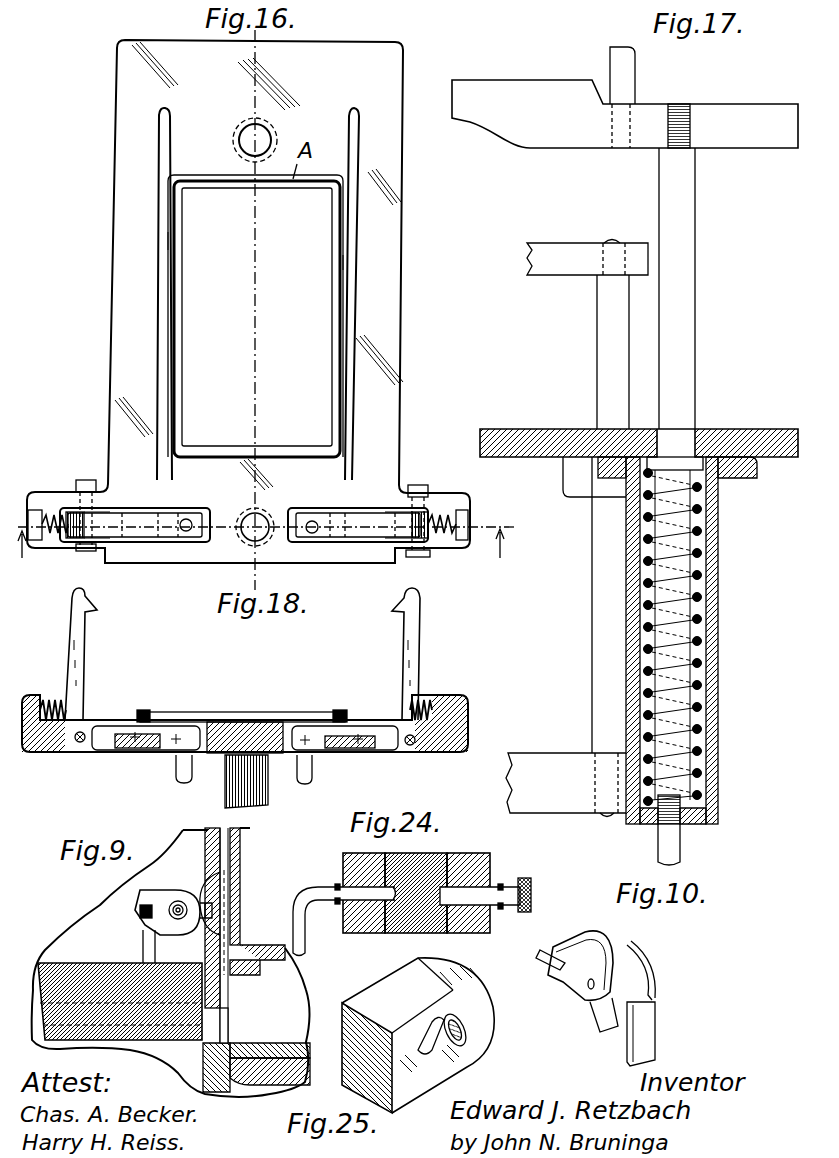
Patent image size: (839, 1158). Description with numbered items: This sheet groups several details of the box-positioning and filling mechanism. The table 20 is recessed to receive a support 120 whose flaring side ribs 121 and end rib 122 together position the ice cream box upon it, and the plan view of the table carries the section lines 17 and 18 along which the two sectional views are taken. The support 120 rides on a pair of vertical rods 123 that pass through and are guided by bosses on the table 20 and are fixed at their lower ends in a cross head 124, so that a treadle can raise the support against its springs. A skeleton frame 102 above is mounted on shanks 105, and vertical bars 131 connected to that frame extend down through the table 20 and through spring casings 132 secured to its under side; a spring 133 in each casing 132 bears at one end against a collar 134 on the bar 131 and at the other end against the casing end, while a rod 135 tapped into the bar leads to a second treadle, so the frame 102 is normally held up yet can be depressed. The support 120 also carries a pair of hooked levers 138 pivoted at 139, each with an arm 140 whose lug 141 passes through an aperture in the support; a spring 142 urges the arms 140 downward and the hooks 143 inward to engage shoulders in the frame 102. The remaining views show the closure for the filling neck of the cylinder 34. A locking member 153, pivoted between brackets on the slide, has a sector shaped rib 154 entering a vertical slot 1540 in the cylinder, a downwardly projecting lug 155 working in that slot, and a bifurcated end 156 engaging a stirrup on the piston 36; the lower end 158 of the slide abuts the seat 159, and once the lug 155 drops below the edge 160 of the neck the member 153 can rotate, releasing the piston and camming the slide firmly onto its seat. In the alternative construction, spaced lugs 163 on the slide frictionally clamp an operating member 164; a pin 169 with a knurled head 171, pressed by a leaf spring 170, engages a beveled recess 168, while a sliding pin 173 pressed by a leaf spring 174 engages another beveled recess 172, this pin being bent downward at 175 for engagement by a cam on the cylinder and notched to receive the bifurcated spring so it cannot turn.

In FIG. 16, the section line 17— 17 is at (260, 303).
In FIG. 16, the section line 18— 18 is at (270, 553).
In FIG. 17, the table 20 is at (736, 432).
In FIG. 9, the liner or cylinder 34 is at (79, 942).
In FIG. 9, the piston 36 is at (54, 965).
In FIG. 17, the skeleton frame 102 is at (625, 114).
In FIG. 17, the shank 105 is at (626, 80).
In FIG. 16, the support 120 is at (385, 316).
In FIG. 18, the support 120 is at (470, 736).
In FIG. 17, the support 120 is at (565, 252).
In FIG. 16, the flaring side ribs 121 is at (165, 238).
In FIG. 18, the flaring side ribs 121 is at (143, 712).
In FIG. 16, the end rib 122 is at (292, 452).
In FIG. 18, the end rib 122 is at (240, 718).
In FIG. 16, the vertical rods 123 is at (262, 134).
In FIG. 18, the vertical rods 123 is at (266, 797).
In FIG. 17, the vertical rods 123 is at (598, 330).
In FIG. 17, the cross head 124 is at (566, 785).
In FIG. 17, the vertical bar 131 is at (690, 300).
In FIG. 17, the spring casing 132 is at (718, 576).
In FIG. 17, the spring 133 is at (708, 634).
In FIG. 17, the collar 134 is at (683, 455).
In FIG. 17, the rod 135 is at (672, 856).
In FIG. 18, the hooked levers 138 is at (76, 642).
In FIG. 16, the pivot 139 is at (86, 481).
In FIG. 18, the pivot 139 is at (80, 745).
In FIG. 16, the arm 140 is at (145, 530).
In FIG. 18, the arm 140 is at (130, 728).
In FIG. 16, the lug 141 is at (190, 511).
In FIG. 18, the lug 141 is at (183, 776).
In FIG. 16, the spring 142 is at (54, 530).
In FIG. 18, the spring 142 is at (52, 703).
In FIG. 16, the hooks 143 is at (88, 520).
In FIG. 18, the hooks 143 is at (96, 606).
In FIG. 9, the locking member 153 is at (177, 892).
In FIG. 10, the locking member 153 is at (610, 953).
In FIG. 9, the sector shaped rib 154 is at (234, 890).
In FIG. 10, the sector shaped rib 154 is at (644, 970).
In FIG. 9, the downwardly projecting lug 155 is at (230, 966).
In FIG. 10, the downwardly projecting lug 155 is at (650, 1034).
In FIG. 9, the bifurcated end 156 is at (140, 924).
In FIG. 10, the bifurcated end 156 is at (548, 959).
In FIG. 9, the lower end of slide 158 is at (212, 1010).
In FIG. 9, the seat 159 is at (218, 1040).
In FIG. 9, the edge of neck 160 is at (239, 947).
In FIG. 24, the spaced lugs 163 is at (504, 856).
In FIG. 24, the operating member 164 is at (418, 881).
In FIG. 25, the operating member 164 is at (418, 1035).
In FIG. 24, the beveled recess 168 is at (446, 876).
In FIG. 24, the pin 169 is at (486, 926).
In FIG. 24, the leaf spring 170 is at (496, 888).
In FIG. 24, the knurled head 171 is at (531, 890).
In FIG. 24, the beveled recess 172 is at (372, 930).
In FIG. 25, the beveled recess 172 is at (440, 1050).
In FIG. 24, the sliding pin 173 is at (345, 886).
In FIG. 24, the leaf spring 174 is at (334, 906).
In FIG. 24, the bent portion of pin 175 is at (297, 919).
In FIG. 9, the vertical slot 1540 is at (226, 866).